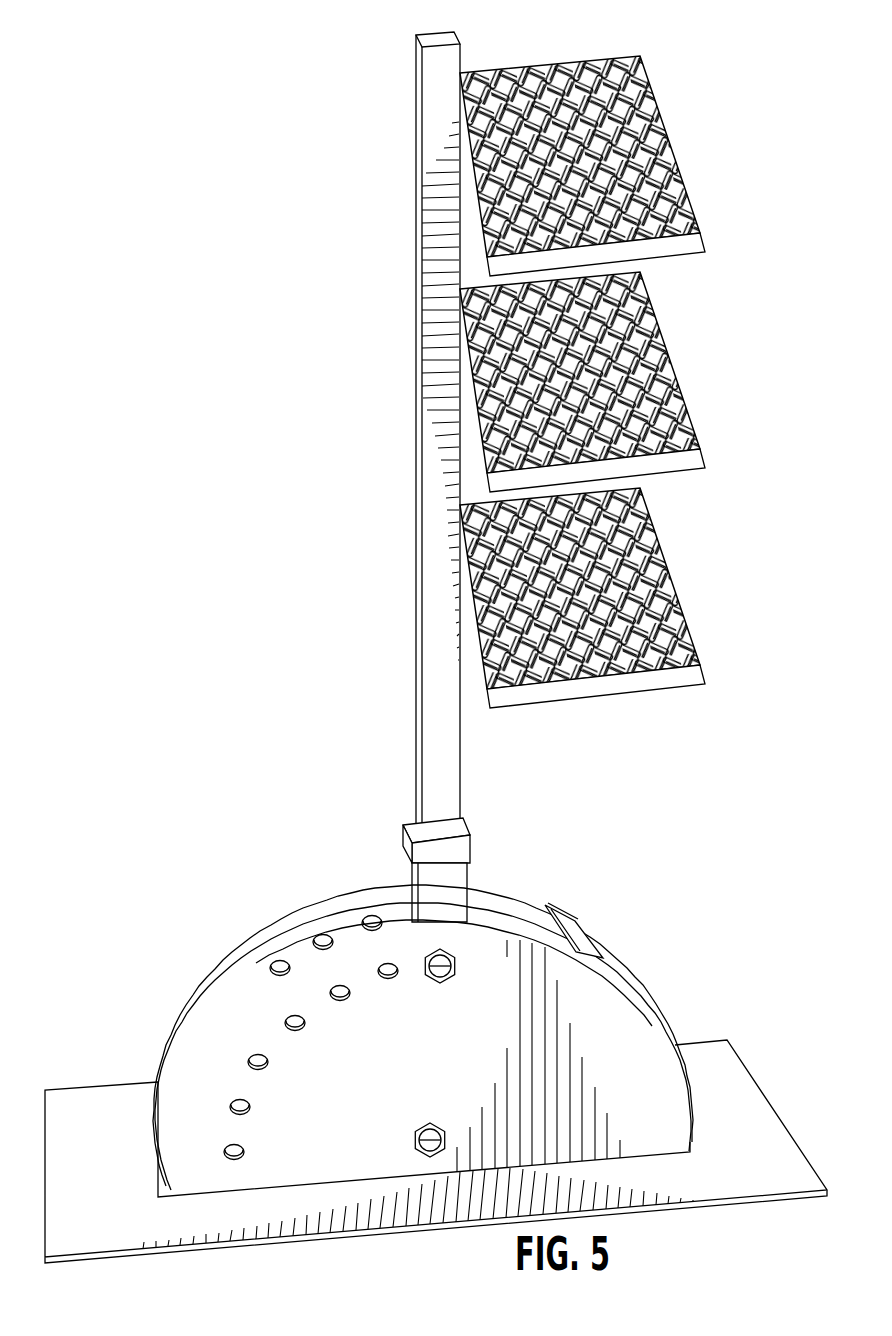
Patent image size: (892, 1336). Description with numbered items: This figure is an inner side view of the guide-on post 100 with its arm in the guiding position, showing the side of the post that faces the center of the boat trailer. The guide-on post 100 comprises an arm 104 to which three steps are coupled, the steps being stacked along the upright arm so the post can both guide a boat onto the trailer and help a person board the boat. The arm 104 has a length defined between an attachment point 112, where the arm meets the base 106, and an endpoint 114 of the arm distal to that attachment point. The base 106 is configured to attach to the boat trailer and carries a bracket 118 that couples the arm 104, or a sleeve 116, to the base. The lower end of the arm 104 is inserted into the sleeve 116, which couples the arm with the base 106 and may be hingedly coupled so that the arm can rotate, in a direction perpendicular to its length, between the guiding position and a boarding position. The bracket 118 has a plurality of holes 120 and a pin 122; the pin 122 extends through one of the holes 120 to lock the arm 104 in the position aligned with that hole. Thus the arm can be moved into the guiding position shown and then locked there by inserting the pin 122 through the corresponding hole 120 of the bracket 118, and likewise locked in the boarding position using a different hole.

The guide-on post 100 is at (175, 140).
The arm 104 is at (437, 263).
The base 106 is at (100, 1120).
The attachment point 112 is at (447, 1136).
The endpoint 114 is at (433, 43).
The sleeve 116 is at (447, 880).
The bracket 118 is at (540, 987).
The holes 120 is at (235, 1097).
The pin 122 is at (423, 967).